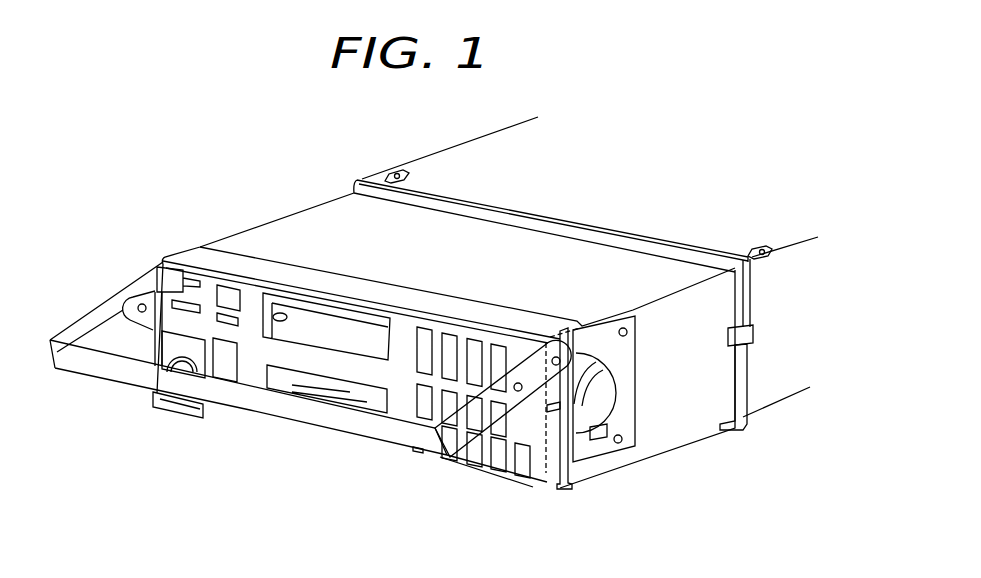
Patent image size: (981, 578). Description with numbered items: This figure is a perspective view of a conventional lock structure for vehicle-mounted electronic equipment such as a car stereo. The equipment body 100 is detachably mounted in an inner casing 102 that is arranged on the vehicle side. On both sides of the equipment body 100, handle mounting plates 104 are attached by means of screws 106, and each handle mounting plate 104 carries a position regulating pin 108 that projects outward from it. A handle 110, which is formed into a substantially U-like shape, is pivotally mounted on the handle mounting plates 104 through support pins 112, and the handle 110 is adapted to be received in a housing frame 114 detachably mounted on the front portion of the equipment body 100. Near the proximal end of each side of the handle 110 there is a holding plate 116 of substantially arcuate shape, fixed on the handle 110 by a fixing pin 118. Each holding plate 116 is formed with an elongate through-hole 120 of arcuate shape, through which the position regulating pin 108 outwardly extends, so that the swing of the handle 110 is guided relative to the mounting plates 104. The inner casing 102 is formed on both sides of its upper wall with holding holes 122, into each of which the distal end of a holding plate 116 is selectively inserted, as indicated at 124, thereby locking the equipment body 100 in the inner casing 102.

The body 100 is at (273, 222).
The inner casing 102 is at (440, 152).
The handle mounting plate 104 is at (597, 340).
The screw 106 is at (627, 313).
The position regulating pin 108 is at (607, 407).
The handle 110 is at (303, 423).
The support pin 112 is at (550, 350).
The housing frame 114 is at (320, 275).
The holding plate 116 is at (148, 295).
The fixing pin 118 is at (113, 300).
The elongate through-hole 120 is at (576, 414).
The holding hole 122 is at (392, 174).
The distal end of holding plate inserted into holding hole 124 is at (581, 387).